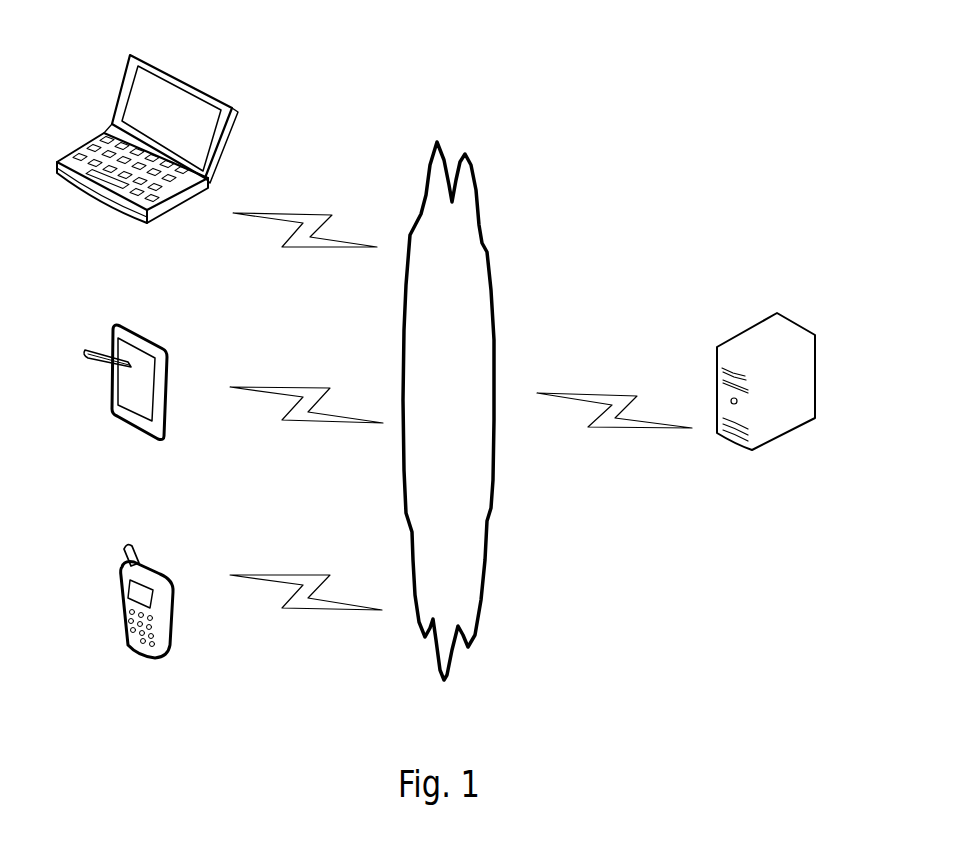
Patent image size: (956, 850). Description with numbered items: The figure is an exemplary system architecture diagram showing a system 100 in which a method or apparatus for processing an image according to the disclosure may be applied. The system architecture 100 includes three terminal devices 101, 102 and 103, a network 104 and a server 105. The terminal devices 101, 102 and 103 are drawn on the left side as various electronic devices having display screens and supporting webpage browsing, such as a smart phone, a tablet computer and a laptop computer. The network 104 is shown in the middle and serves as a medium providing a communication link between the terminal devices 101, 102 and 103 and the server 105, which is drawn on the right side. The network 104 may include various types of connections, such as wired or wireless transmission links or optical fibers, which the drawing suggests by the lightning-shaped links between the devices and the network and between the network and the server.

The system architecture 100 is at (673, 45).
The terminal device 101 is at (147, 623).
The terminal device 102 is at (125, 402).
The terminal device 103 is at (147, 161).
The network 104 is at (448, 411).
The server 105 is at (766, 405).